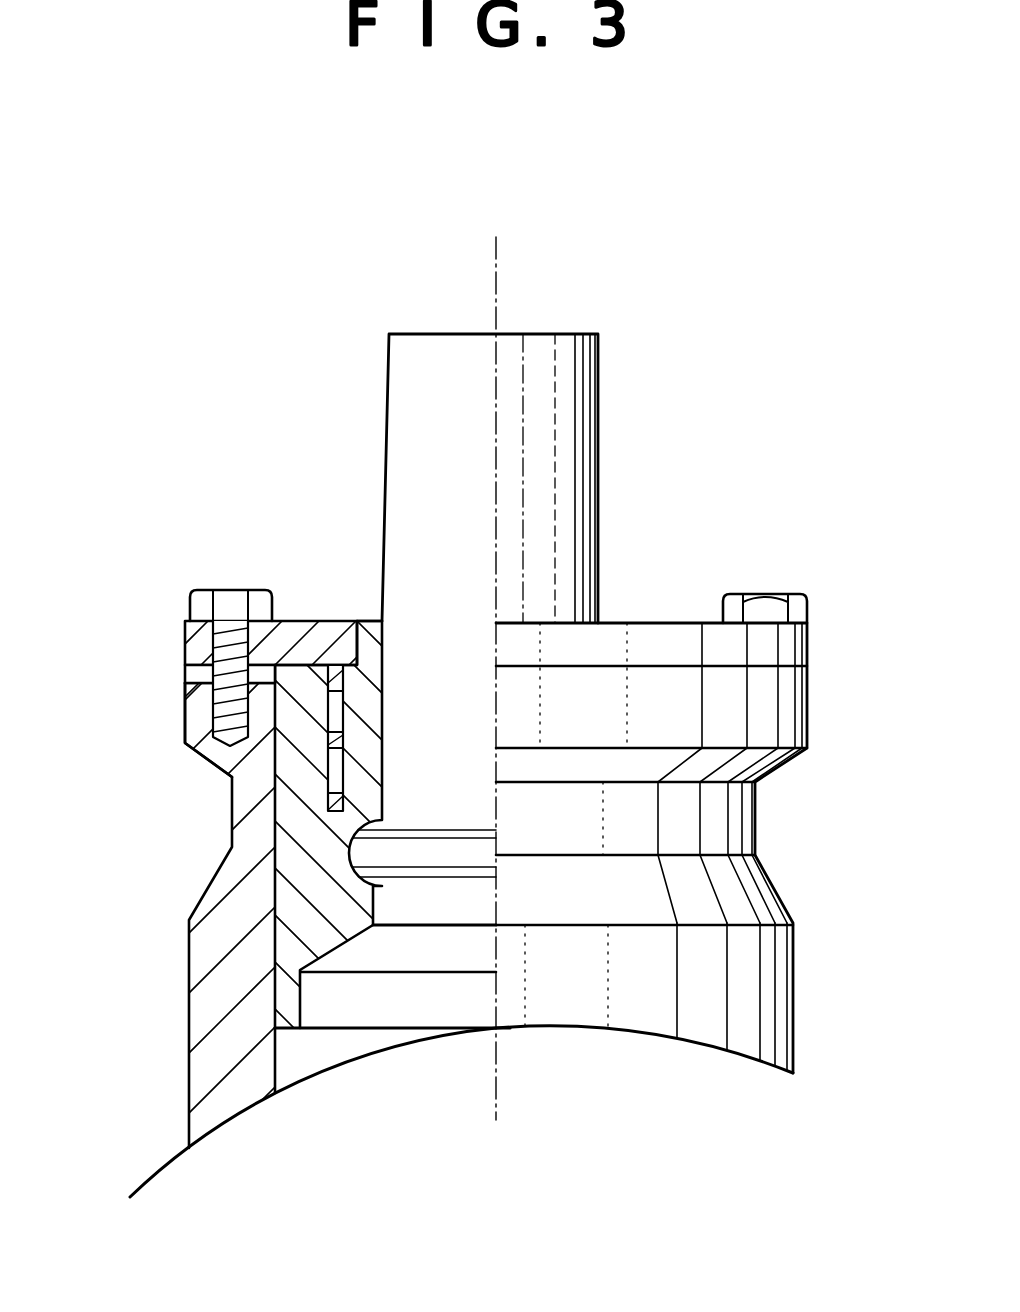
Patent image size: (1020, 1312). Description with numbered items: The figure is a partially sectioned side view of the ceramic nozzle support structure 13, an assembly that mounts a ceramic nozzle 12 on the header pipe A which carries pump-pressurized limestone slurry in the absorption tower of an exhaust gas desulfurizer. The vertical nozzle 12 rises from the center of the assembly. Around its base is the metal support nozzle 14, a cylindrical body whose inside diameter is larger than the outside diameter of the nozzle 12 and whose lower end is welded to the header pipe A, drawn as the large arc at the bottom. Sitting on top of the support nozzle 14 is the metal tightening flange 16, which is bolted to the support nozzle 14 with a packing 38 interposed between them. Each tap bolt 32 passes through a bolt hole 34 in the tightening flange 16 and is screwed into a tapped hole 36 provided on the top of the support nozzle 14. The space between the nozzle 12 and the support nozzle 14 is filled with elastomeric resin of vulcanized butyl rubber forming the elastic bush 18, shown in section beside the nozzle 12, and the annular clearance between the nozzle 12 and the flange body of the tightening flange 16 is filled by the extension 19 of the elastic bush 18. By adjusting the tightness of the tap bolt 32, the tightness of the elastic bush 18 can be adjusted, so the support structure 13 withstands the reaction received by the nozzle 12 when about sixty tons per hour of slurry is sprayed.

The nozzle 12 is at (600, 420).
The ceramic nozzle support structure 13 is at (738, 345).
The support nozzle 14 is at (190, 928).
The tightening flange 16 is at (185, 640).
The elastic bush 18 is at (290, 813).
The extension of the elastic bush 19 is at (374, 614).
The tap bolt 32 is at (230, 590).
The bolt hole 34 is at (262, 657).
The tapped hole 36 is at (188, 720).
The packing 38 is at (185, 675).
The header pipe A is at (160, 1168).